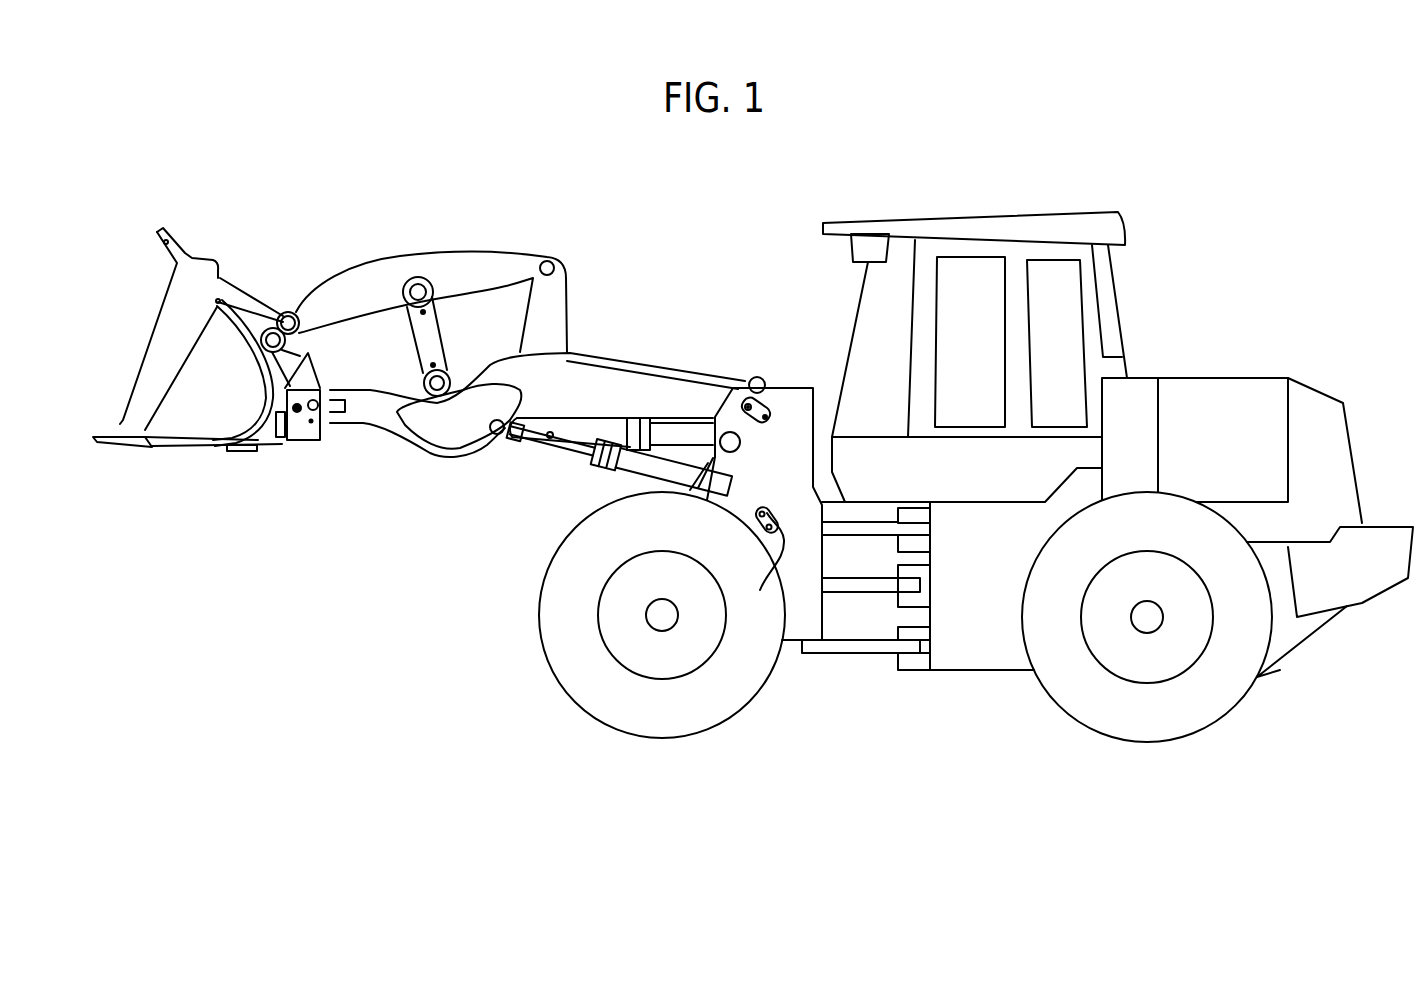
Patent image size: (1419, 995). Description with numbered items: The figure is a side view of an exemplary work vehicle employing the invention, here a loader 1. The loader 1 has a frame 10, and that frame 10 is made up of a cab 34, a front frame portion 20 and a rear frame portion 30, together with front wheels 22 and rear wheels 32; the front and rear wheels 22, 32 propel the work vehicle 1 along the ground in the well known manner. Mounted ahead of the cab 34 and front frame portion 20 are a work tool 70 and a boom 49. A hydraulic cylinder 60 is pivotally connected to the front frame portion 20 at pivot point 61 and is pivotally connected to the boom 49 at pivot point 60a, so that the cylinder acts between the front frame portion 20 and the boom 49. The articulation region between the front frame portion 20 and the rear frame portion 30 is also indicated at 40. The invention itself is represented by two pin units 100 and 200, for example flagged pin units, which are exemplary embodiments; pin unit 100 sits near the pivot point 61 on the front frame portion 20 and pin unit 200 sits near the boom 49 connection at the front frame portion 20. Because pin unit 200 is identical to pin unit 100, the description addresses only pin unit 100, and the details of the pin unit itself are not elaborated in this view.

The loader 1 is at (962, 155).
The frame 10 is at (1160, 190).
The front frame portion 20 is at (824, 390).
The front wheels 22 is at (580, 690).
The rear frame portion 30 is at (1000, 694).
The rear wheels 32 is at (1165, 722).
The cab 34 is at (983, 320).
The articulation joint 40 is at (860, 686).
The boom 49 is at (590, 397).
The hydraulic cylinder 60 is at (588, 478).
The pivot point 60a is at (493, 440).
The pivot point 61 is at (745, 523).
The work tool 70 is at (218, 393).
The pin unit 100 is at (759, 567).
The pin unit 200 is at (764, 398).